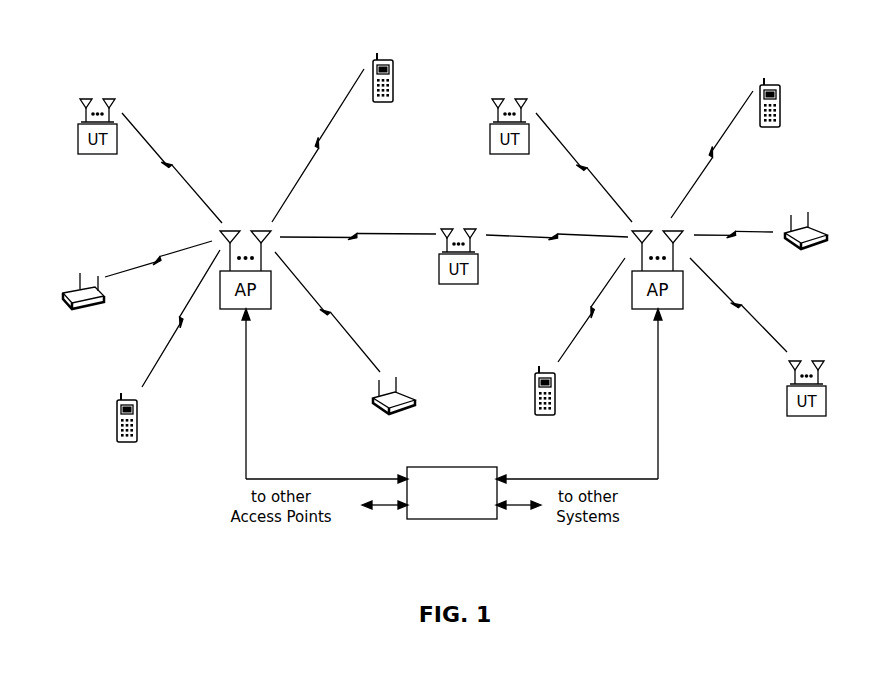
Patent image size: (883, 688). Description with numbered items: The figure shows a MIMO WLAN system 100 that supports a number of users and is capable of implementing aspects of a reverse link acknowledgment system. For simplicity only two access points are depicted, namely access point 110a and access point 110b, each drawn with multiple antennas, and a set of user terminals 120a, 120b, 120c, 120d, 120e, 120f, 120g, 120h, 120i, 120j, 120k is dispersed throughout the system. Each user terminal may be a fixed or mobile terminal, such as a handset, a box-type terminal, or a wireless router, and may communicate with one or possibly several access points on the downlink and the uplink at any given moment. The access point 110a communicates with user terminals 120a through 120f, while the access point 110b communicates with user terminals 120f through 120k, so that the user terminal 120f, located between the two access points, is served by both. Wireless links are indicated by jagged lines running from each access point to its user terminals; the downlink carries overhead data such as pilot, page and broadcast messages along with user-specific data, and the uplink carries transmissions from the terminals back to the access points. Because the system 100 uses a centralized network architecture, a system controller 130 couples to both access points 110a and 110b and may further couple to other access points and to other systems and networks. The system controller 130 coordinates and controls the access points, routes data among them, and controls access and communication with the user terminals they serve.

The MIMO WLAN system 100 is at (630, 42).
The access point 110a is at (264, 310).
The access point 110b is at (676, 310).
The user terminal 120a is at (114, 427).
The user terminal 120b is at (73, 285).
The user terminal 120c is at (78, 142).
The user terminal 120d is at (394, 77).
The user terminal 120e is at (398, 391).
The user terminal 120f is at (437, 274).
The user terminal 120g is at (533, 401).
The user terminal 120h is at (828, 406).
The user terminal 120i is at (815, 226).
The user terminal 120j is at (781, 108).
The user terminal 120k is at (490, 142).
The system controller 130 is at (446, 466).